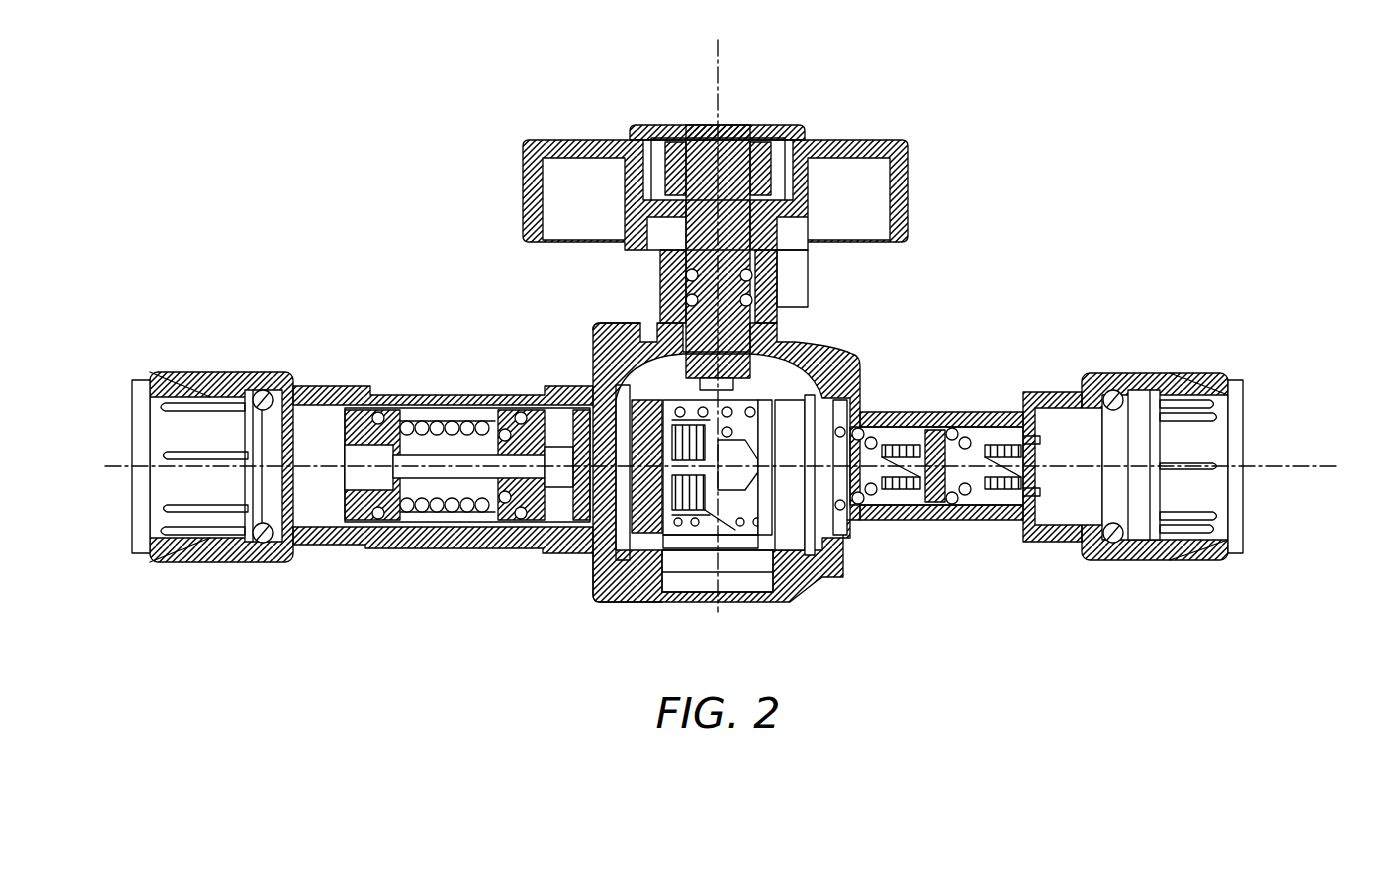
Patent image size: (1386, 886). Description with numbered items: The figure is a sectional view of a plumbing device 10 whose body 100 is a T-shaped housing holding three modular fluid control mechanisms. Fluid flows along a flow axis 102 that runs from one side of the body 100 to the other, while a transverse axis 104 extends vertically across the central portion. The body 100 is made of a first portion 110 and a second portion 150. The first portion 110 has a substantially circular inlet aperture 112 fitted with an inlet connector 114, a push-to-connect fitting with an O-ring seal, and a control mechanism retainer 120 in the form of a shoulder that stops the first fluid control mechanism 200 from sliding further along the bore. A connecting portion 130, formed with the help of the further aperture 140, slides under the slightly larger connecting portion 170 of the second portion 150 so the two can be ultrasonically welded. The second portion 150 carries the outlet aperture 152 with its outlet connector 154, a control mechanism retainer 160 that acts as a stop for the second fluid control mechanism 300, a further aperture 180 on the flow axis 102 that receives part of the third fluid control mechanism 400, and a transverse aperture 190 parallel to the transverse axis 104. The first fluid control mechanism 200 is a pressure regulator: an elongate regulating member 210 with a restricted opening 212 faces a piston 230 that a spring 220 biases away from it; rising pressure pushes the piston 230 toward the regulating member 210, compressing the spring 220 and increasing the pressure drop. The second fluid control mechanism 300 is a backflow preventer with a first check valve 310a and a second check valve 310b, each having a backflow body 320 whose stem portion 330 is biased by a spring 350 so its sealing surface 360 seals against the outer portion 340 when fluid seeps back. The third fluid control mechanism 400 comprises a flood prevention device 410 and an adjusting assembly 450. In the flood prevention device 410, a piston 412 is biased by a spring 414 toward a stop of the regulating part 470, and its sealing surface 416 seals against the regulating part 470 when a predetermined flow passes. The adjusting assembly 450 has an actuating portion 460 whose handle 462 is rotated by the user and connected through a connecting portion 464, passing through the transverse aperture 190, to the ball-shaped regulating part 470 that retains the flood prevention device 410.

The plumbing device 10 is at (1058, 135).
The body 100 is at (232, 180).
The flow axis 102 is at (735, 436).
The transverse axis 104 is at (722, 56).
The first portion 110 is at (195, 306).
The inlet aperture 112 is at (142, 431).
The inlet connector 114 is at (160, 498).
The control mechanism retainer 120 is at (580, 415).
The connecting portion 130 is at (597, 348).
The further aperture 140 is at (622, 560).
The second portion 150 is at (1114, 316).
The outlet aperture 152 is at (1243, 425).
The outlet connector 154 is at (1250, 505).
The control mechanism retainer 160 is at (1035, 497).
The connecting portion 170 is at (634, 332).
The further aperture 180 is at (670, 580).
The transverse aperture 190 is at (764, 315).
The first fluid control mechanism 200 is at (425, 377).
The regulating member 210 is at (400, 522).
The opening 212 is at (440, 472).
The spring 220 is at (480, 522).
The piston 230 is at (550, 472).
The second fluid control mechanism 300 is at (970, 330).
The first check valve 310a is at (880, 398).
The second check valve 310b is at (986, 402).
The backflow body 320 is at (945, 505).
The stem portion 330 is at (880, 510).
The outer portion 340 is at (860, 530).
The spring 350 is at (1038, 442).
The sealing surface 360 is at (885, 405).
The third fluid control mechanism 400 is at (908, 76).
The flood prevention device 410 is at (832, 620).
The piston 412 is at (710, 515).
The spring 414 is at (762, 520).
The sealing surface 416 is at (735, 530).
The adjusting assembly 450 is at (846, 250).
The actuating portion 460 is at (520, 107).
The handle 462 is at (580, 142).
The connecting portion 464 is at (688, 240).
The regulating part 470 is at (788, 420).